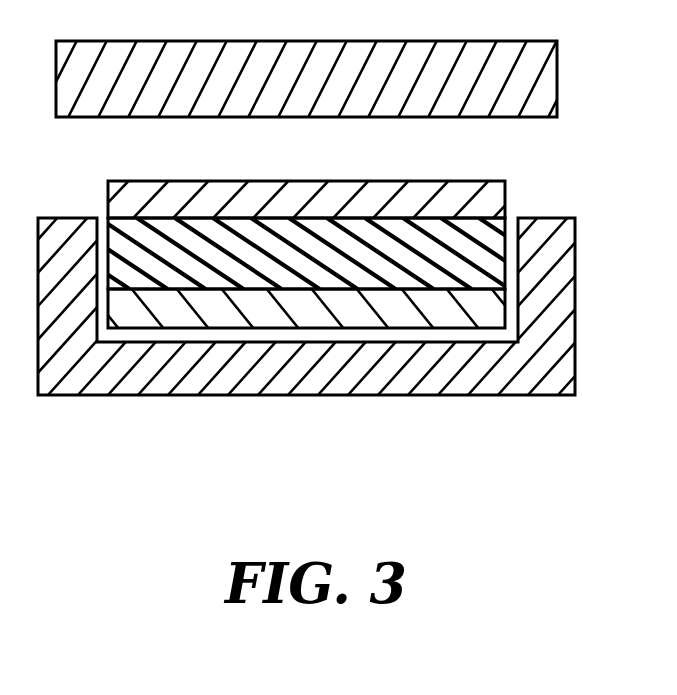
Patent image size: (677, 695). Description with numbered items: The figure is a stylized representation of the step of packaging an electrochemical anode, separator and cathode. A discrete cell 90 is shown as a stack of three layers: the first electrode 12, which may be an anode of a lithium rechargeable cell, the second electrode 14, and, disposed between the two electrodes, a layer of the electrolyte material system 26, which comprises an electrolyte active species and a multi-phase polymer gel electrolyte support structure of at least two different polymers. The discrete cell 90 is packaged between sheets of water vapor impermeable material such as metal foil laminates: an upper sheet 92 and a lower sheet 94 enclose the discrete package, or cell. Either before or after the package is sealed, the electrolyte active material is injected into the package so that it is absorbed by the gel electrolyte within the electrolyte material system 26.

The first electrode 12 is at (320, 313).
The second electrode 14 is at (170, 203).
The electrolyte material system 26 is at (108, 230).
The discrete cell 90 is at (530, 206).
The sheet 92 is at (557, 62).
The sheet 94 is at (497, 377).